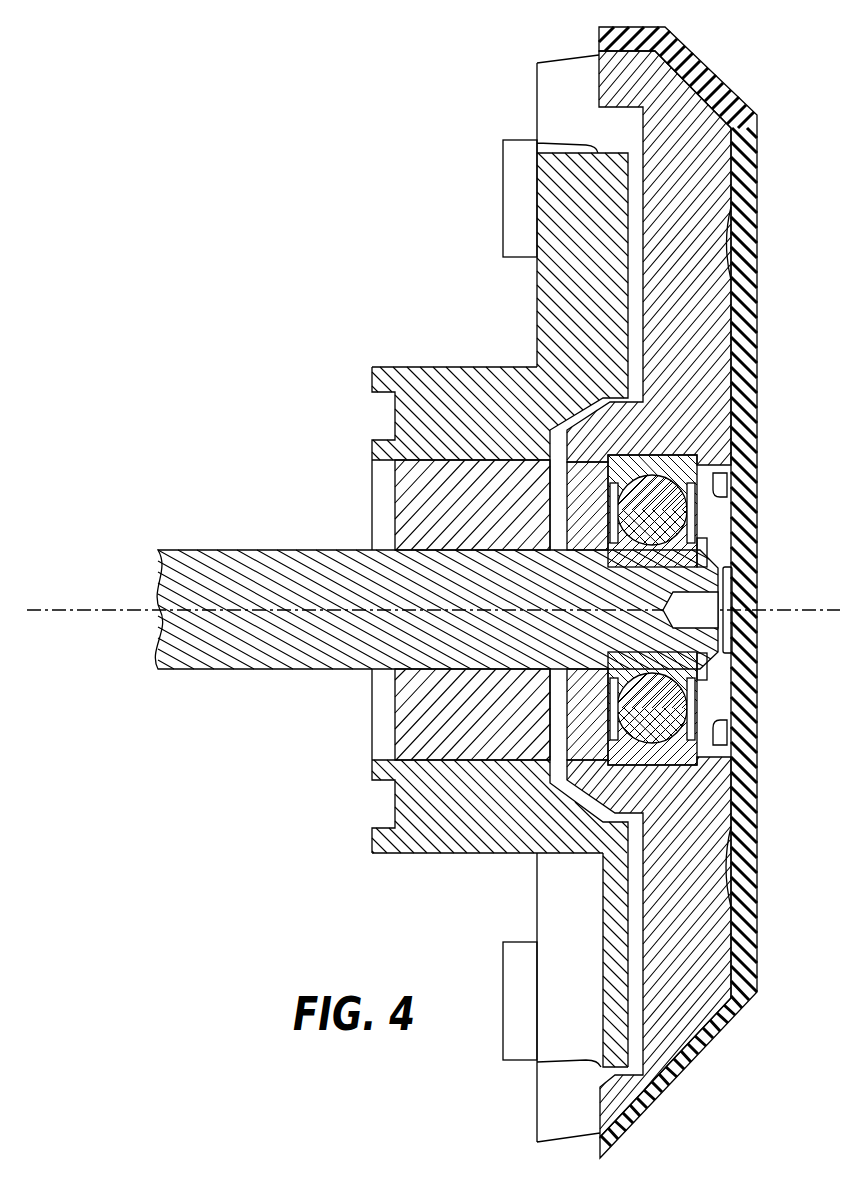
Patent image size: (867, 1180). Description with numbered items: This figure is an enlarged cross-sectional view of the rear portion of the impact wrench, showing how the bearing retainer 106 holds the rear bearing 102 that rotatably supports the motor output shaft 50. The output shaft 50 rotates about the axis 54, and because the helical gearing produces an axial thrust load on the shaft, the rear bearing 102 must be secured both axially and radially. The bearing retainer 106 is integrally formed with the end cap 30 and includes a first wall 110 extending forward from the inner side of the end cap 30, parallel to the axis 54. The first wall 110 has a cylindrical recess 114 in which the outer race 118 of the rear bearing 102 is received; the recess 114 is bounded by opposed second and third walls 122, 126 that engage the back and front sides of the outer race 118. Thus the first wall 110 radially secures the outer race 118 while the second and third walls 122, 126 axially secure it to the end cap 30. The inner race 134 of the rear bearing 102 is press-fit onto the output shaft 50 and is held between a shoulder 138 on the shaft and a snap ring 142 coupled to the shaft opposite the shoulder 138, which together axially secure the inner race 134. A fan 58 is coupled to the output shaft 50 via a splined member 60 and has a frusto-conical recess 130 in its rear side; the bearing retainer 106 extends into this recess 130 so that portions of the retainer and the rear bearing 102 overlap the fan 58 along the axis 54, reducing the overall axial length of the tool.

The end cap 30 is at (707, 833).
The output shaft 50 is at (238, 567).
The axis 54 is at (115, 607).
The fan 58 is at (408, 367).
The splined member 60 is at (413, 728).
The rear bearing 102 is at (697, 702).
The bearing retainer 106 is at (693, 410).
The first wall 110 is at (612, 848).
The recess 114 is at (693, 743).
The outer race 118 is at (690, 453).
The second wall 122 is at (682, 763).
The third wall 126 is at (622, 790).
The frusto-conical recess 130 is at (548, 415).
The inner race 134 is at (690, 540).
The shoulder 138 is at (605, 545).
The snap ring 142 is at (705, 553).